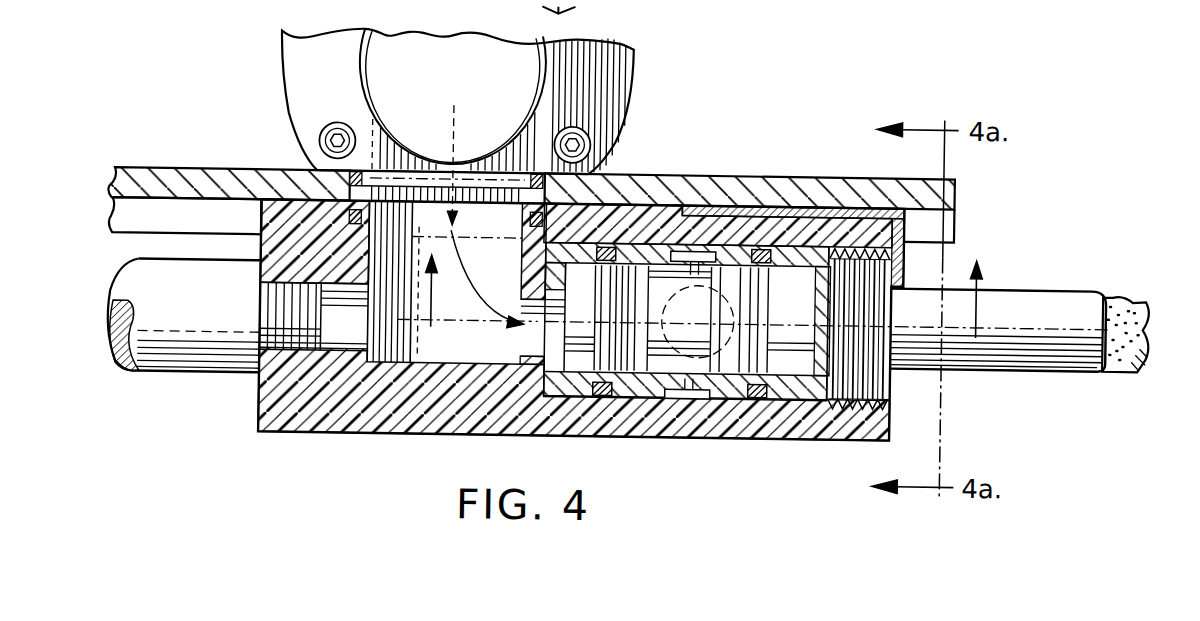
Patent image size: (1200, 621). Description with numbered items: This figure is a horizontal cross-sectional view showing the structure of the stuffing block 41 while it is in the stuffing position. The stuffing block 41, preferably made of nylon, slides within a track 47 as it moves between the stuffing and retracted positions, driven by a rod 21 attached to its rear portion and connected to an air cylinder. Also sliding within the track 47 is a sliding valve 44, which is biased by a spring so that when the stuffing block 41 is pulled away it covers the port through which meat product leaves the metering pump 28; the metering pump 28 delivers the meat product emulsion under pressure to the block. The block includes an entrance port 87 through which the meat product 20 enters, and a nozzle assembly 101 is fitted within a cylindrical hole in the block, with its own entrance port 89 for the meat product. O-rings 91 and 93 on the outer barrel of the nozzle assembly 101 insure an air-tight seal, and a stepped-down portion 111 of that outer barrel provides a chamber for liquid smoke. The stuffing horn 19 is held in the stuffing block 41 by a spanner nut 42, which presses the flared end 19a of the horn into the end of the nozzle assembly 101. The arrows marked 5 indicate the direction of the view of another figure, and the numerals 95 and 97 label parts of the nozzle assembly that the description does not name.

The metering pump 28 is at (302, 65).
The track 47 is at (927, 186).
The sliding valve 44 is at (835, 197).
The stuffing block 41 is at (768, 426).
The rod 21 is at (173, 352).
The stuffing horn 19 is at (1028, 360).
The meat product 20 is at (1120, 338).
The flared end 19a is at (845, 400).
The spanner nut 42 is at (858, 360).
The entrance port 87 is at (498, 263).
The entrance port 89 is at (530, 328).
The O-ring 91 is at (608, 240).
The O-ring 93 is at (763, 240).
The pin 95 is at (688, 243).
The sleeve 97 is at (577, 392).
The nozzle assembly 101 is at (644, 392).
The stepped-down portion 111 is at (690, 391).
The view direction arrows 5 is at (705, 311).